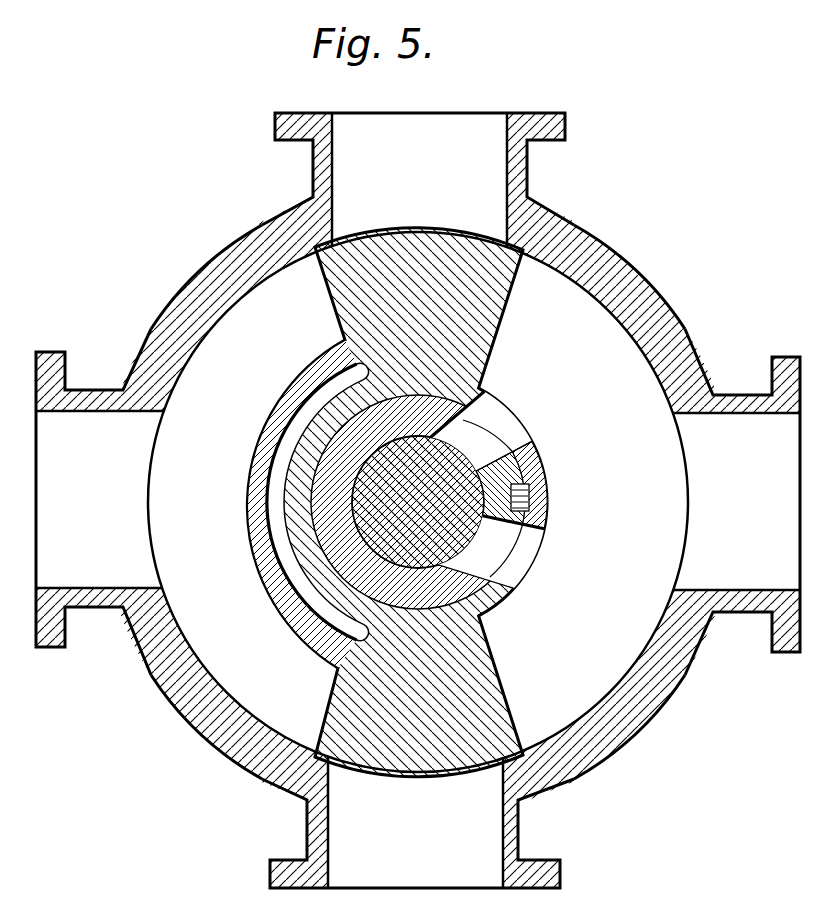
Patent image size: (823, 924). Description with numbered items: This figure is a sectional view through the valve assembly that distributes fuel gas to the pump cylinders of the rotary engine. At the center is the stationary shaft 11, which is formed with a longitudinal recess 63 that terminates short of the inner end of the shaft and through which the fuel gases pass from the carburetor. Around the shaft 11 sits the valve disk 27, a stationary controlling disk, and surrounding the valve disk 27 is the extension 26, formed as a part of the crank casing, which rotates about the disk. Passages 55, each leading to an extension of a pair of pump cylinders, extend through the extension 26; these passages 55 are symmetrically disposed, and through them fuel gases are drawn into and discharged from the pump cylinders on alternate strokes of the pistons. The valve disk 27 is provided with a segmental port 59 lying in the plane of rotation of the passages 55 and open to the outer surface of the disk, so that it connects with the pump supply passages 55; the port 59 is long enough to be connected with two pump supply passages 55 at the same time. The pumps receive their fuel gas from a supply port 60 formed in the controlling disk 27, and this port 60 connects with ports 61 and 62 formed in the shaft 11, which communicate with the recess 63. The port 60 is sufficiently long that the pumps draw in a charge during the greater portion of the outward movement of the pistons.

The passage 55 is at (418, 500).
The extension 26 is at (645, 726).
The segmental port 59 is at (197, 500).
The supply port 60 is at (615, 521).
The valve disk 27 is at (332, 663).
The shaft 11 is at (360, 534).
The recess 63 is at (415, 420).
The port 62 is at (473, 448).
The port 61 is at (473, 556).